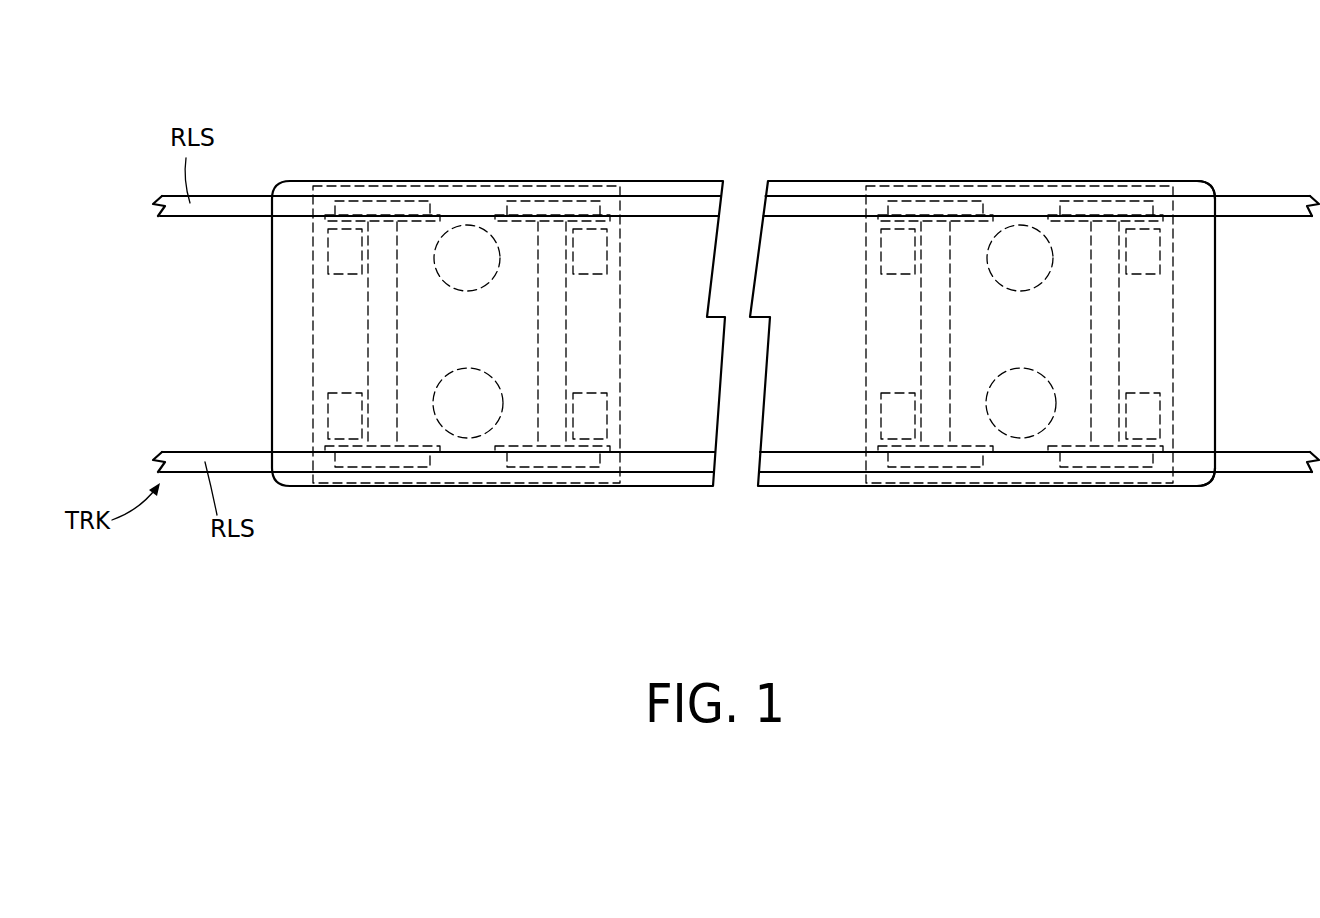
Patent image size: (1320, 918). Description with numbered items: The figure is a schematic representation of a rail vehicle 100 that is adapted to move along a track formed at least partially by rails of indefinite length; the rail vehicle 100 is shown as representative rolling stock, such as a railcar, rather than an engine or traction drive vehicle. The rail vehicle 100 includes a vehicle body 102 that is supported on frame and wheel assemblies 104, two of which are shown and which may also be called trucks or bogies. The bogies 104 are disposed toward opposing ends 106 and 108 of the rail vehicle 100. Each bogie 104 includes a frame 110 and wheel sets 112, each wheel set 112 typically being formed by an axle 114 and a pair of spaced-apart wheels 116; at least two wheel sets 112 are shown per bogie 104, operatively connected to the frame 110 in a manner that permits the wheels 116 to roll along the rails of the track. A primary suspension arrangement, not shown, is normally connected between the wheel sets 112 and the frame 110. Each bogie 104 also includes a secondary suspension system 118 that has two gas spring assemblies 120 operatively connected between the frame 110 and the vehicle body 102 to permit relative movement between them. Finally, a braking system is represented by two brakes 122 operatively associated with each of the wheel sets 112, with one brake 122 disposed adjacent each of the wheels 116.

The rail vehicle 100 is at (1072, 122).
The vehicle body 102 is at (803, 178).
The frame and wheel assemblies 104 is at (520, 400).
The opposing end 106 is at (272, 160).
The opposing end 108 is at (1222, 170).
The frame 110 is at (335, 485).
The wheel sets 112 is at (358, 297).
The axle 114 is at (397, 345).
The wheels 116 is at (368, 200).
The secondary suspension system 118 is at (501, 308).
The gas spring assemblies 120 is at (458, 226).
The brakes 122 is at (328, 250).